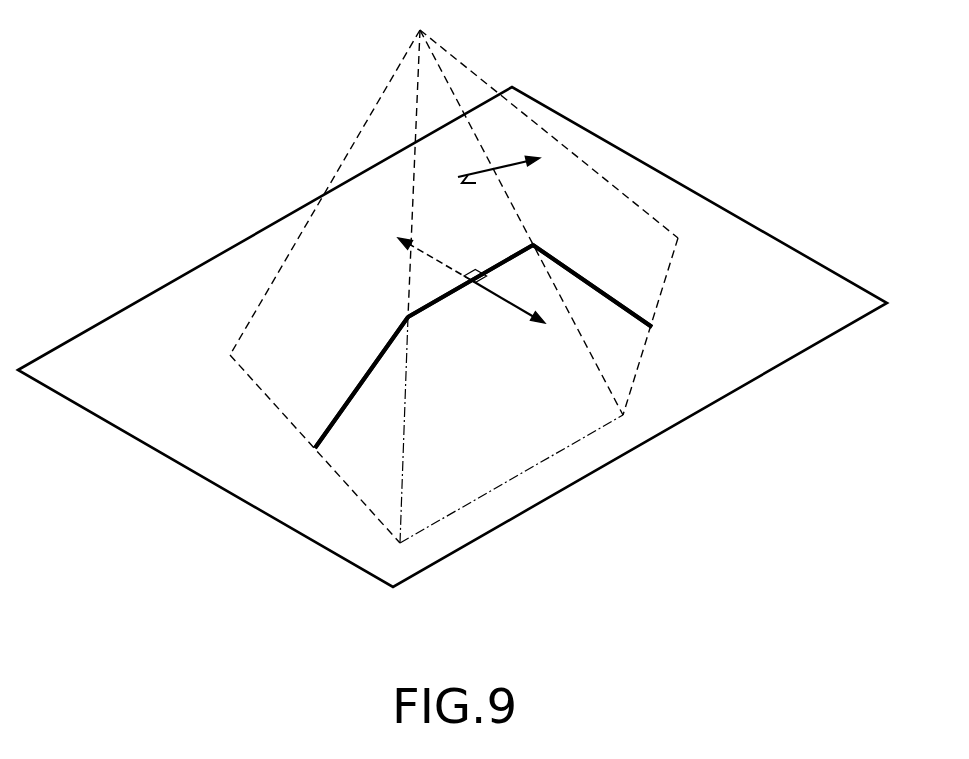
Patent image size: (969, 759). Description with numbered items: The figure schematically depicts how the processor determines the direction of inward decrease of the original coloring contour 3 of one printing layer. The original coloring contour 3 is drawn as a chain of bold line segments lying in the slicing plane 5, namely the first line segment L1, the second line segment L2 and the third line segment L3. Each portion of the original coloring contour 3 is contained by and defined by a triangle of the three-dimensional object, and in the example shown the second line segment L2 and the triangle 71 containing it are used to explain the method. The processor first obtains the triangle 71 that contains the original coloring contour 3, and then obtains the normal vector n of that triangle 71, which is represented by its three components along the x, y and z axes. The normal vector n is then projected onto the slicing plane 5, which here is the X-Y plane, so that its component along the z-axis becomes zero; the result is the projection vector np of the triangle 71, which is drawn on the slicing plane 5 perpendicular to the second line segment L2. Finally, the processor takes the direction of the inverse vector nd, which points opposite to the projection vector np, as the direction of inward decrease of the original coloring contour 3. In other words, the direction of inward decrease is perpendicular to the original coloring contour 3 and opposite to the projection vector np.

The original coloring contour 3 is at (620, 307).
The slicing plane 5 is at (757, 247).
The triangle 71 is at (442, 95).
The normal vector n is at (508, 165).
The inverse vector nd is at (442, 262).
The projection vector np is at (500, 297).
The first line segment L1 is at (605, 292).
The second line segment L2 is at (443, 293).
The third line segment L3 is at (367, 374).